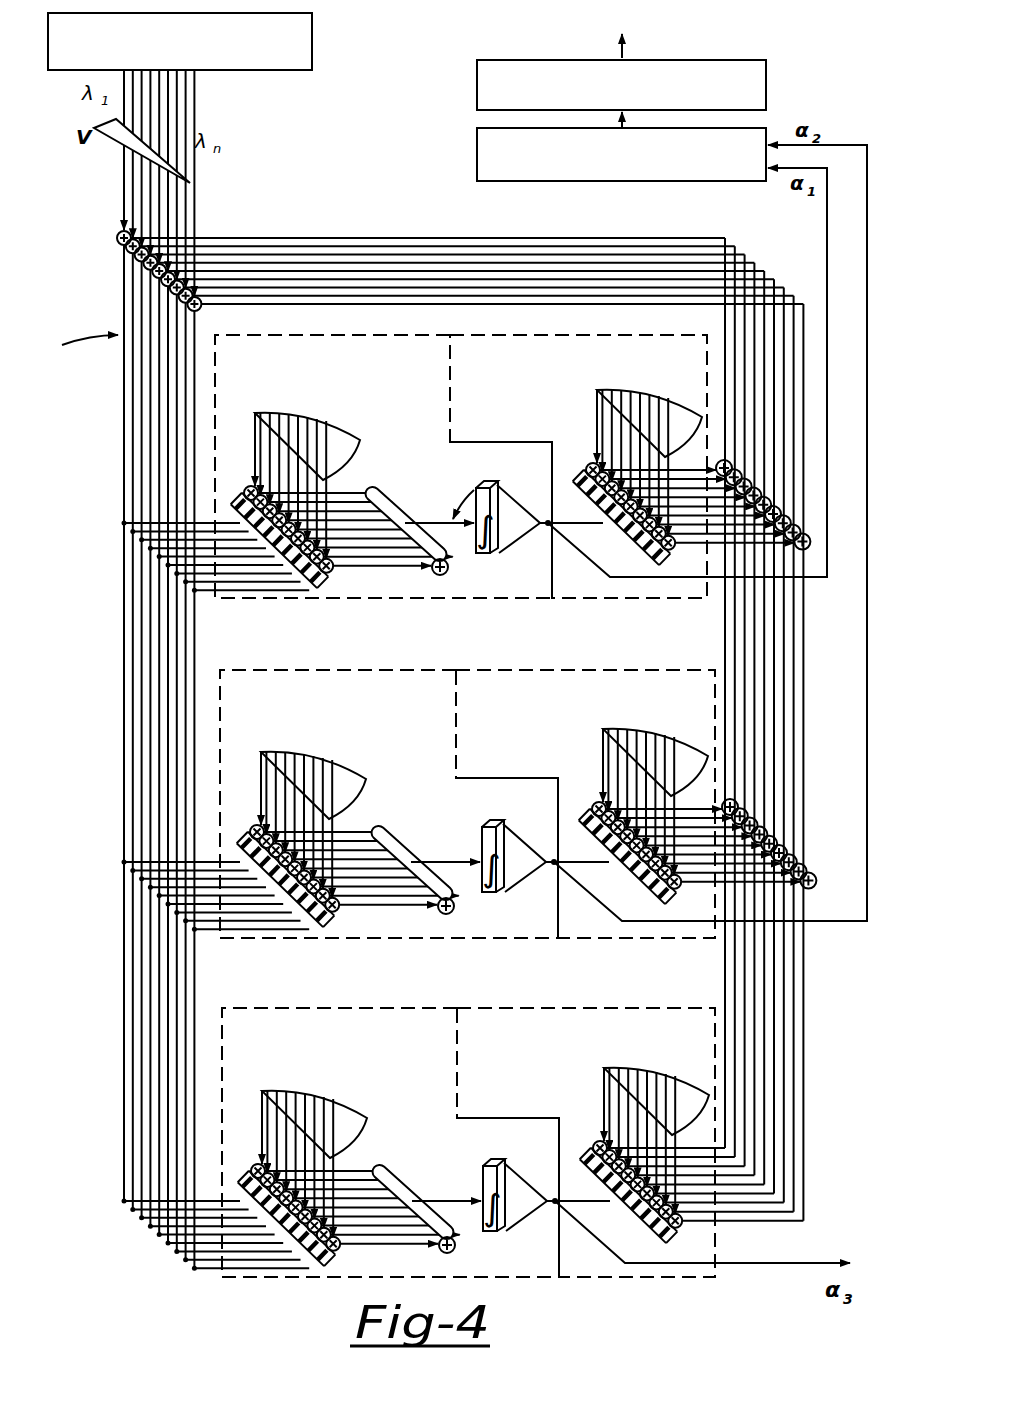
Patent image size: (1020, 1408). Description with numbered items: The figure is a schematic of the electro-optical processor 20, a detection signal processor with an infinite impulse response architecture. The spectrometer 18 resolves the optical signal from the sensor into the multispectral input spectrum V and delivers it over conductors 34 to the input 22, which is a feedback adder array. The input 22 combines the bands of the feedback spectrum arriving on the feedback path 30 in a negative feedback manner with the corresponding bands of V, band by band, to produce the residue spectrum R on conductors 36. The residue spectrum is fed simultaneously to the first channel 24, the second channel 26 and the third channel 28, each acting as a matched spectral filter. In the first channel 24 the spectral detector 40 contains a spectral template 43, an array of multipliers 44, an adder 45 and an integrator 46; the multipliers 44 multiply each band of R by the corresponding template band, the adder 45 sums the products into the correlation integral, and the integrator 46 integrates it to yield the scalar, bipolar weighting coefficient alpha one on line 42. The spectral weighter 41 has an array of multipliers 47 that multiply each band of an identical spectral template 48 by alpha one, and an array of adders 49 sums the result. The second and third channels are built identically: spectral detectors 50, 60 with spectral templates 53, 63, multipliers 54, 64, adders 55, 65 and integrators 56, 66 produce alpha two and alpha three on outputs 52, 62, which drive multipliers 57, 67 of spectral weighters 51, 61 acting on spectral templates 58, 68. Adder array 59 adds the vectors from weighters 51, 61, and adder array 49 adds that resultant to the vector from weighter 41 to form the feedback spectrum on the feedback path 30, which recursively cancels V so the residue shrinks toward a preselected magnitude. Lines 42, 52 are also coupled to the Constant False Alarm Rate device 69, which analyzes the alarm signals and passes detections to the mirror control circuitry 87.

The spectrometer 18 is at (182, 66).
The electro-optical processor 20 is at (455, 172).
The input 22 is at (108, 240).
The first channel 24 is at (390, 323).
The second channel 26 is at (486, 798).
The third channel 28 is at (489, 1120).
The feedback path 30 is at (598, 232).
The conductors 34 is at (120, 103).
The conductors 36 is at (118, 296).
The spectral detector F1 40 is at (428, 367).
The spectral weighter F1 41 is at (700, 383).
The output line 42 is at (545, 518).
The spectral template 43 is at (303, 435).
The array of multipliers 44 is at (244, 485).
The adder 45 is at (402, 519).
The integrator 46 is at (492, 558).
The array of multipliers 47 is at (676, 552).
The spectral template 48 is at (638, 392).
The array of adders 49 is at (802, 553).
The spectral detector 50 is at (389, 804).
The spectral weighter 51 is at (585, 804).
The output line 52 is at (547, 869).
The spectral template 53 is at (336, 805).
The array of multipliers 54 is at (282, 832).
The adder 55 is at (372, 862).
The integrator 56 is at (539, 837).
The array of multipliers 57 is at (714, 886).
The spectral template 58 is at (659, 783).
The adder array 59 is at (785, 837).
The spectral detector 60 is at (390, 1142).
The spectral weighter 61 is at (586, 1142).
The output 62 is at (554, 1210).
The spectral template 63 is at (340, 1132).
The array of multipliers 64 is at (284, 1162).
The adder 65 is at (373, 1197).
The integrator 66 is at (533, 1176).
The array of multipliers 67 is at (692, 1200).
The spectral template 68 is at (730, 1141).
The Constant False Alarm Rate device 69 is at (766, 128).
The mirror control circuitry 87 is at (766, 92).